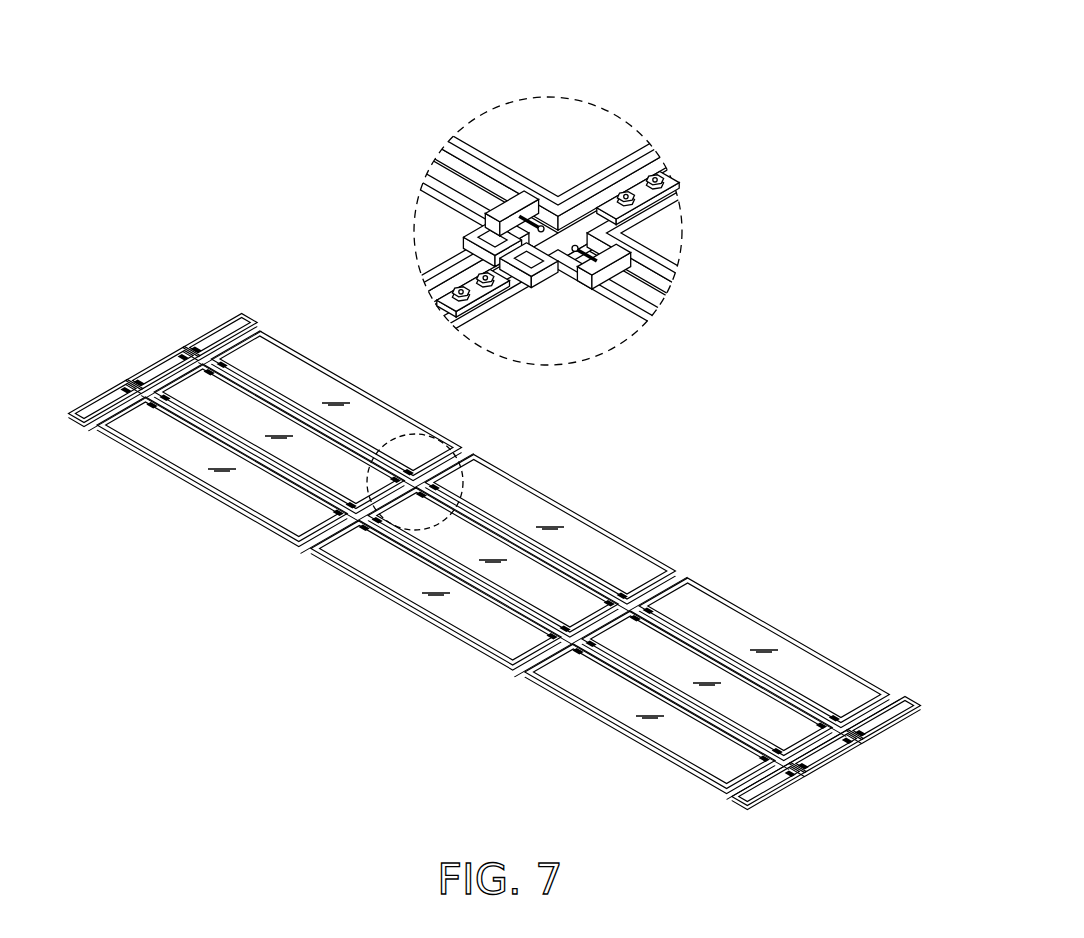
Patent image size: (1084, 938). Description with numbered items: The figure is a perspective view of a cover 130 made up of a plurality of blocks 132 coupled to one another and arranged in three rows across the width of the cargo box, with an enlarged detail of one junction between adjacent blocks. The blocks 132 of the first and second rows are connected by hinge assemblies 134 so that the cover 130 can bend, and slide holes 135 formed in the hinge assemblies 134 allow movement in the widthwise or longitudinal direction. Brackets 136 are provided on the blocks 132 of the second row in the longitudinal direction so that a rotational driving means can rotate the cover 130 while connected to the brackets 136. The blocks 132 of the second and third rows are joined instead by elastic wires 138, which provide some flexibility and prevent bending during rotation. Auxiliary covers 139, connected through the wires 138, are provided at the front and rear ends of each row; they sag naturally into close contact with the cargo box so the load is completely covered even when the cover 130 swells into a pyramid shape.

The cover 130 is at (542, 413).
The block 132 is at (547, 132).
The hinge assembly 134 is at (647, 170).
The slide hole 135 is at (447, 277).
The bracket 136 is at (512, 205).
The wire 138 is at (593, 247).
The auxiliary cover 139 is at (243, 334).